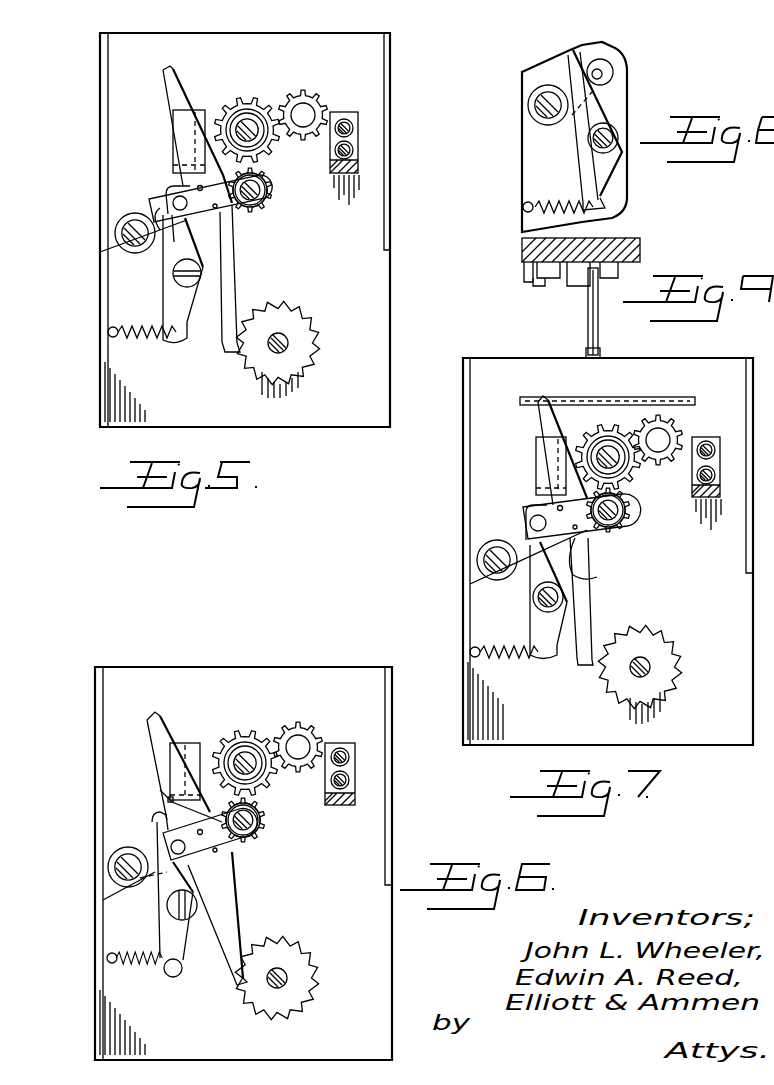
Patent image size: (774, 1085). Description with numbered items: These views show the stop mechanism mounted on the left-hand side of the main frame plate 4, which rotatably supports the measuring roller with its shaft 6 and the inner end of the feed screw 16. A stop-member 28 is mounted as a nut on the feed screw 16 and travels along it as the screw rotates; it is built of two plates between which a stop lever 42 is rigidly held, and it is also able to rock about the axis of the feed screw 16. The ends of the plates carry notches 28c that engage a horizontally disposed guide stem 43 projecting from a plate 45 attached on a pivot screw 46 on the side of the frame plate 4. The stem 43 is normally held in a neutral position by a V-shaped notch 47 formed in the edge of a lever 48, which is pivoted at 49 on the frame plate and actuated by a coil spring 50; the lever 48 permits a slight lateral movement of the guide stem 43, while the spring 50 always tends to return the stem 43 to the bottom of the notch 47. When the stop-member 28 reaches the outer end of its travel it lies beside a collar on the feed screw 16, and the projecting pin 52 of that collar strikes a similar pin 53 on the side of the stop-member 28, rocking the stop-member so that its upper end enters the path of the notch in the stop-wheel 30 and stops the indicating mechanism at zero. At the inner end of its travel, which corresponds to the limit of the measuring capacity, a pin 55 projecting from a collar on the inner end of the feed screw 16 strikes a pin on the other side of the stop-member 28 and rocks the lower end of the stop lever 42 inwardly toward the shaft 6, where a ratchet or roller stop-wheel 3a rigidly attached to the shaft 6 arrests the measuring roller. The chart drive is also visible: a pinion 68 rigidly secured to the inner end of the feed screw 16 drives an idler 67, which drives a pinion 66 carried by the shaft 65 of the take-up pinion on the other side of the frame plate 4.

In FIG. 5, the ratchet wheel 3a is at (300, 346).
In FIG. 7, the ratchet wheel 3a is at (665, 683).
In FIG. 6, the ratchet wheel 3a is at (292, 1005).
In FIG. 5, the main frame plate 4 is at (245, 230).
In FIG. 8, the main frame plate 4 is at (523, 82).
In FIG. 9, the main frame plate 4 is at (581, 252).
In FIG. 7, the main frame plate 4 is at (608, 546).
In FIG. 6, the main frame plate 4 is at (243, 863).
In FIG. 5, the shaft 6 is at (270, 352).
In FIG. 7, the shaft 6 is at (633, 668).
In FIG. 6, the shaft 6 is at (290, 972).
In FIG. 5, the feed screw 16 is at (266, 182).
In FIG. 7, the feed screw 16 is at (632, 512).
In FIG. 6, the feed screw 16 is at (270, 822).
In FIG. 5, the stop-member 28 is at (240, 214).
In FIG. 7, the stop-member 28 is at (600, 578).
In FIG. 6, the stop-member 28 is at (235, 855).
In FIG. 5, the notches 28c is at (176, 200).
In FIG. 7, the notches 28c is at (533, 524).
In FIG. 6, the notches 28c is at (168, 833).
In FIG. 7, the stop-wheel 30 is at (607, 387).
In FIG. 5, the stop lever 42 is at (185, 136).
In FIG. 7, the stop lever 42 is at (542, 465).
In FIG. 6, the stop lever 42 is at (181, 760).
In FIG. 5, the guide stem 43 is at (178, 203).
In FIG. 8, the guide stem 43 is at (602, 76).
In FIG. 9, the guide stem 43 is at (600, 337).
In FIG. 7, the guide stem 43 is at (535, 575).
In FIG. 6, the guide stem 43 is at (220, 890).
In FIG. 5, the plate 45 is at (186, 218).
In FIG. 8, the plate 45 is at (612, 88).
In FIG. 9, the plate 45 is at (565, 252).
In FIG. 7, the plate 45 is at (517, 528).
In FIG. 6, the plate 45 is at (147, 860).
In FIG. 5, the pivot screw 46 is at (132, 240).
In FIG. 8, the pivot screw 46 is at (546, 107).
In FIG. 9, the pivot screw 46 is at (550, 280).
In FIG. 7, the pivot screw 46 is at (494, 566).
In FIG. 6, the pivot screw 46 is at (124, 888).
In FIG. 8, the notch 47 is at (574, 56).
In FIG. 5, the lever 48 is at (173, 299).
In FIG. 8, the lever 48 is at (592, 166).
In FIG. 9, the lever 48 is at (580, 284).
In FIG. 7, the lever 48 is at (545, 630).
In FIG. 6, the lever 48 is at (174, 899).
In FIG. 5, the pivot 49 is at (183, 278).
In FIG. 8, the pivot 49 is at (608, 133).
In FIG. 9, the pivot 49 is at (605, 293).
In FIG. 7, the pivot 49 is at (548, 597).
In FIG. 6, the pivot 49 is at (180, 915).
In FIG. 5, the coil spring 50 is at (138, 338).
In FIG. 8, the coil spring 50 is at (530, 207).
In FIG. 9, the coil spring 50 is at (530, 277).
In FIG. 7, the coil spring 50 is at (517, 660).
In FIG. 6, the coil spring 50 is at (140, 972).
In FIG. 7, the projecting pin 52 is at (623, 564).
In FIG. 5, the pin 53 is at (262, 200).
In FIG. 7, the pin 53 is at (625, 500).
In FIG. 6, the pin 53 is at (262, 845).
In FIG. 6, the pin 55 is at (172, 798).
In FIG. 5, the shaft 65 is at (304, 110).
In FIG. 7, the shaft 65 is at (661, 437).
In FIG. 6, the shaft 65 is at (298, 745).
In FIG. 5, the pinion 66 is at (330, 105).
In FIG. 7, the pinion 66 is at (683, 430).
In FIG. 6, the pinion 66 is at (318, 735).
In FIG. 5, the idler 67 is at (247, 97).
In FIG. 7, the idler 67 is at (604, 425).
In FIG. 6, the idler 67 is at (255, 733).
In FIG. 5, the pinion 68 is at (272, 192).
In FIG. 7, the pinion 68 is at (628, 530).
In FIG. 6, the pinion 68 is at (260, 815).